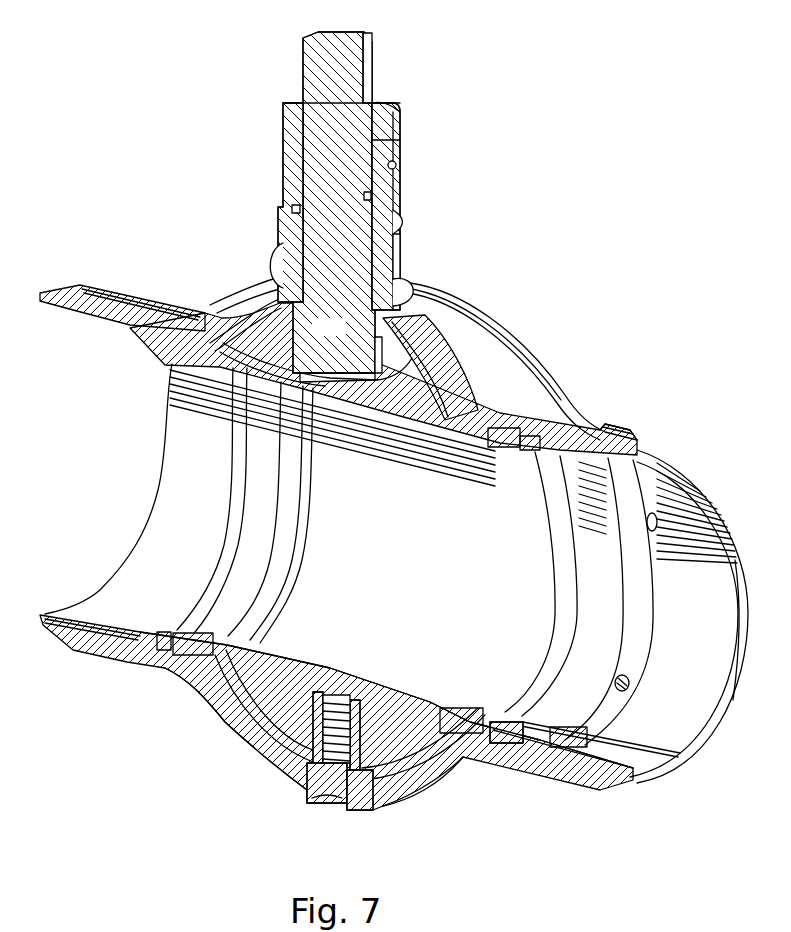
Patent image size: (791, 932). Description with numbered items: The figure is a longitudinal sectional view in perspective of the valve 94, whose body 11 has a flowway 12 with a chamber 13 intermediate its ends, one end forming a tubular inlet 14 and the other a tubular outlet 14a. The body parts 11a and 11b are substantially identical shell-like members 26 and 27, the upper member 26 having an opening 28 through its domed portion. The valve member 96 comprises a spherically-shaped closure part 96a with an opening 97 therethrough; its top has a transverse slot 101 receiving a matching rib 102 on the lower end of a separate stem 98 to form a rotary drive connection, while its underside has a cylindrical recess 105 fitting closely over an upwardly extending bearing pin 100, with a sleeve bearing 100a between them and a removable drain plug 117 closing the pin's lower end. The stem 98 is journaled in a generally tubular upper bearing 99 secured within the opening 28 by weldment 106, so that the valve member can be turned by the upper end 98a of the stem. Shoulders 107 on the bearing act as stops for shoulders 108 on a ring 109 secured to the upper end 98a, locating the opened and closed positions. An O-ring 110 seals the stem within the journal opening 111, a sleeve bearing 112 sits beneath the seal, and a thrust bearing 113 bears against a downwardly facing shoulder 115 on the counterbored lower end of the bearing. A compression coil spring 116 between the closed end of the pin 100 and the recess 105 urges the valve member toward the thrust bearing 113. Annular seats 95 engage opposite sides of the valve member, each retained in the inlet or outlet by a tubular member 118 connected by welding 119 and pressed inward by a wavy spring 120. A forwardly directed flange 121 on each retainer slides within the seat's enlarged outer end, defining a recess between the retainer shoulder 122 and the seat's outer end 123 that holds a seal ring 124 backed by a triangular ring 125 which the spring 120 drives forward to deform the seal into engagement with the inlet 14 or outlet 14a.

The body 11 is at (203, 712).
The upper valve body part 11a is at (226, 298).
The lower valve body part 11b is at (385, 812).
The flowway 12 is at (85, 303).
The chamber 13 is at (297, 720).
The tubular inlet 14 is at (158, 548).
The tubular outlet 14a is at (643, 750).
The shell-like member 26 is at (150, 287).
The shell-like member 27 is at (580, 789).
The opening 28 is at (278, 255).
The valve 94 is at (552, 362).
The annular seat 95 is at (283, 533).
The valve member 96 is at (472, 340).
The spherically-shaped closure part 96a is at (307, 747).
The opening 97 is at (433, 579).
The stem 98 is at (405, 178).
The upper end of the stem 98a is at (372, 72).
The upper bearing 99 is at (407, 222).
The bearing pin 100 is at (307, 777).
The sleeve bearing 100a is at (376, 813).
The slot 101 is at (430, 367).
The rib 102 is at (313, 402).
The cylindrical recess 105 is at (397, 686).
The weldment 106 is at (414, 284).
The shoulders 107 is at (400, 144).
The shoulders 108 is at (397, 165).
The ring 109 is at (397, 110).
The O-ring 110 is at (372, 197).
The opening 111 is at (280, 192).
The sleeve bearing 112 is at (402, 252).
The thrust bearing 113 is at (427, 318).
The shoulder 115 is at (334, 344).
The compression coil spring 116 is at (340, 697).
The drain plug 117 is at (312, 805).
The tubular member 118 is at (248, 522).
The welding 119 is at (630, 683).
The wavy spring 120 is at (508, 427).
The flange 121 is at (486, 452).
The shoulder 122 is at (507, 745).
The outer end of the seat 123 is at (517, 705).
The seal ring 124 is at (512, 444).
The ring 125 is at (170, 630).